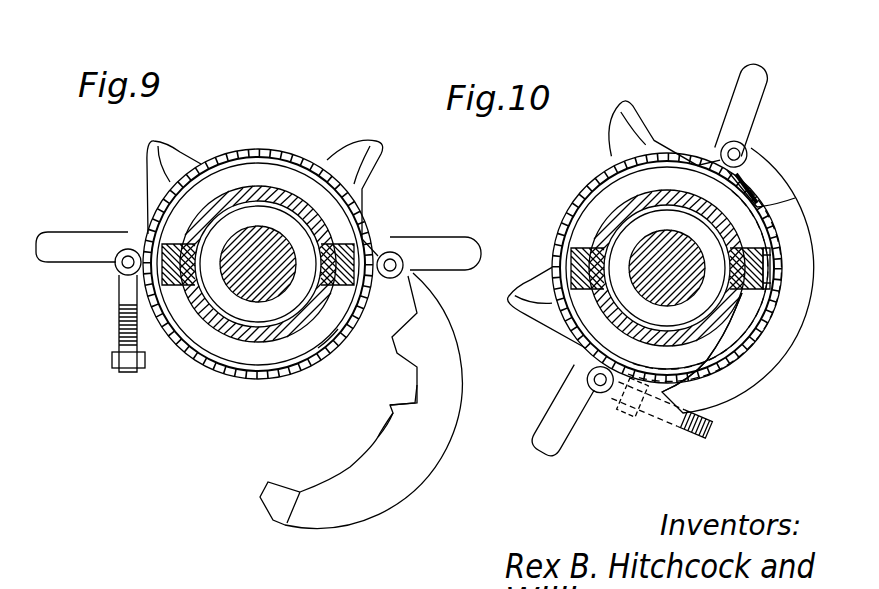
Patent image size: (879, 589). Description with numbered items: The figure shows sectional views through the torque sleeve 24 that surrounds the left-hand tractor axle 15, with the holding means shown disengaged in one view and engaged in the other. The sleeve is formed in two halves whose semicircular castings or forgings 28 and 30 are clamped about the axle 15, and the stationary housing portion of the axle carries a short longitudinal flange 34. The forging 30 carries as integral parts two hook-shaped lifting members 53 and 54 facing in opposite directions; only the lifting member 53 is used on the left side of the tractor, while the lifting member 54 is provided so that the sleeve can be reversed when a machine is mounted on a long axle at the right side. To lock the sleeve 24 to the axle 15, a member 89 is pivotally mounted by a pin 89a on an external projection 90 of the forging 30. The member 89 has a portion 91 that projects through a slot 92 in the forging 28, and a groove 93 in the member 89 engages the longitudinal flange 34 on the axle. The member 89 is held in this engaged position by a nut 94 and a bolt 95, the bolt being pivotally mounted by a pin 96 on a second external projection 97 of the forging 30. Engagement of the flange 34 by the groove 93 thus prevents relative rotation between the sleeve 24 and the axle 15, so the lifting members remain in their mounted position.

In FIG. 9, the left-hand tractor axle 15 is at (250, 296).
In FIG. 10, the left-hand tractor axle 15 is at (658, 296).
In FIG. 9, the torque sleeve 24 is at (256, 149).
In FIG. 10, the torque sleeve 24 is at (579, 198).
In FIG. 9, the casting or forging 28 is at (366, 290).
In FIG. 9, the casting or forging 30 is at (276, 150).
In FIG. 9, the longitudinal flange 34 is at (368, 228).
In FIG. 10, the longitudinal flange 34 is at (770, 260).
In FIG. 9, the lifting member 53 is at (374, 146).
In FIG. 10, the lifting member 53 is at (623, 104).
In FIG. 9, the lifting member 54 is at (146, 150).
In FIG. 10, the lifting member 54 is at (508, 310).
In FIG. 9, the member 89 is at (437, 307).
In FIG. 10, the member 89 is at (741, 397).
In FIG. 9, the pin 89a is at (400, 262).
In FIG. 10, the pin 89a is at (744, 143).
In FIG. 9, the external projection 90 is at (395, 255).
In FIG. 10, the external projection 90 is at (720, 150).
In FIG. 9, the portion 91 is at (390, 413).
In FIG. 10, the portion 91 is at (748, 310).
In FIG. 9, the slot 92 is at (336, 344).
In FIG. 10, the slot 92 is at (792, 200).
In FIG. 9, the groove 93 is at (414, 386).
In FIG. 10, the groove 93 is at (770, 286).
In FIG. 9, the nut 94 is at (118, 324).
In FIG. 10, the nut 94 is at (656, 428).
In FIG. 9, the bolt 95 is at (112, 360).
In FIG. 10, the bolt 95 is at (623, 408).
In FIG. 9, the pin 96 is at (118, 268).
In FIG. 10, the pin 96 is at (590, 390).
In FIG. 9, the external projection 97 is at (139, 238).
In FIG. 10, the external projection 97 is at (590, 378).